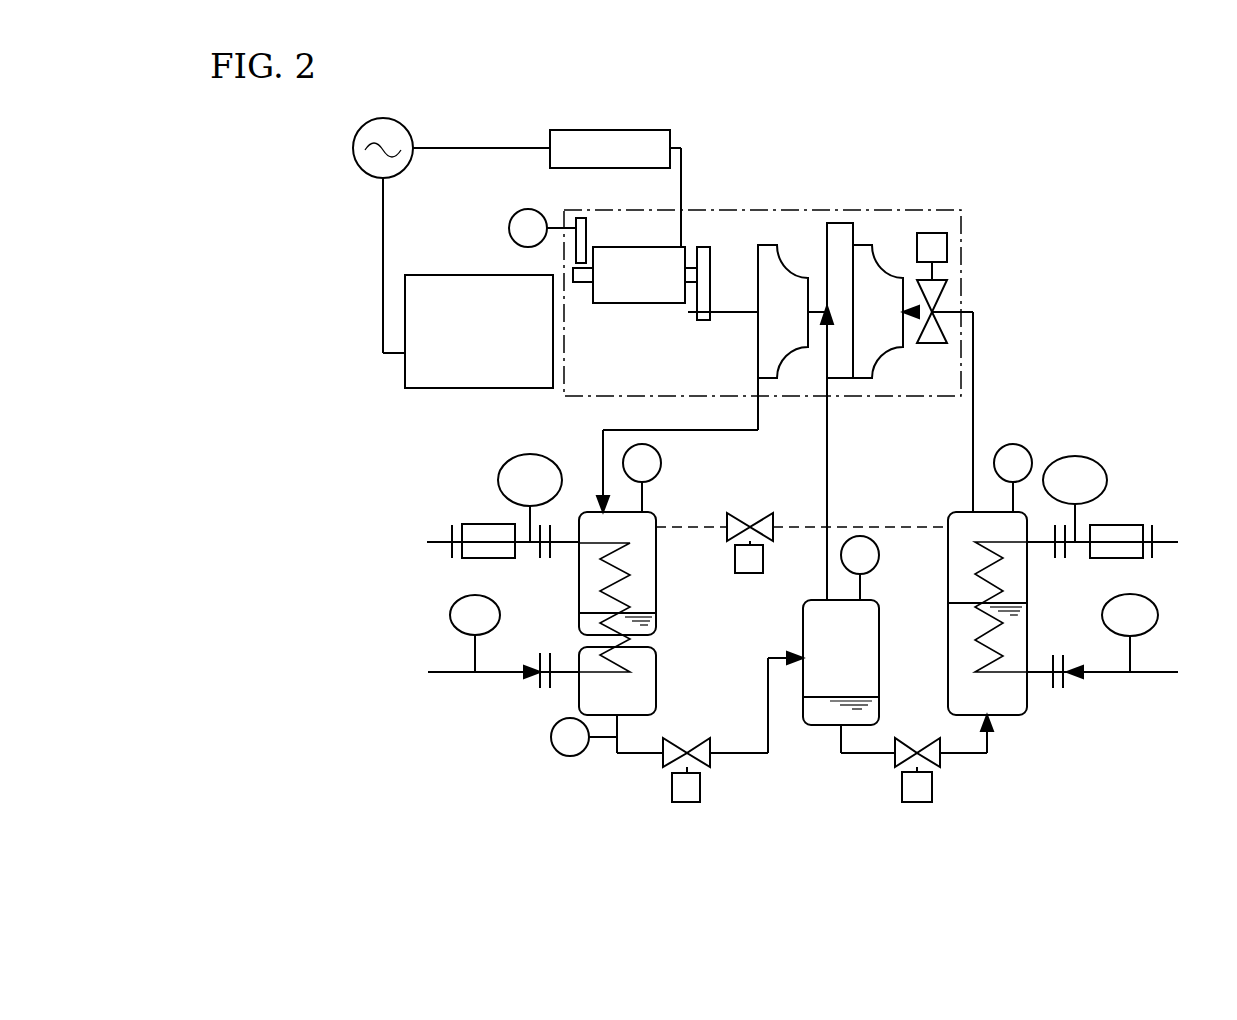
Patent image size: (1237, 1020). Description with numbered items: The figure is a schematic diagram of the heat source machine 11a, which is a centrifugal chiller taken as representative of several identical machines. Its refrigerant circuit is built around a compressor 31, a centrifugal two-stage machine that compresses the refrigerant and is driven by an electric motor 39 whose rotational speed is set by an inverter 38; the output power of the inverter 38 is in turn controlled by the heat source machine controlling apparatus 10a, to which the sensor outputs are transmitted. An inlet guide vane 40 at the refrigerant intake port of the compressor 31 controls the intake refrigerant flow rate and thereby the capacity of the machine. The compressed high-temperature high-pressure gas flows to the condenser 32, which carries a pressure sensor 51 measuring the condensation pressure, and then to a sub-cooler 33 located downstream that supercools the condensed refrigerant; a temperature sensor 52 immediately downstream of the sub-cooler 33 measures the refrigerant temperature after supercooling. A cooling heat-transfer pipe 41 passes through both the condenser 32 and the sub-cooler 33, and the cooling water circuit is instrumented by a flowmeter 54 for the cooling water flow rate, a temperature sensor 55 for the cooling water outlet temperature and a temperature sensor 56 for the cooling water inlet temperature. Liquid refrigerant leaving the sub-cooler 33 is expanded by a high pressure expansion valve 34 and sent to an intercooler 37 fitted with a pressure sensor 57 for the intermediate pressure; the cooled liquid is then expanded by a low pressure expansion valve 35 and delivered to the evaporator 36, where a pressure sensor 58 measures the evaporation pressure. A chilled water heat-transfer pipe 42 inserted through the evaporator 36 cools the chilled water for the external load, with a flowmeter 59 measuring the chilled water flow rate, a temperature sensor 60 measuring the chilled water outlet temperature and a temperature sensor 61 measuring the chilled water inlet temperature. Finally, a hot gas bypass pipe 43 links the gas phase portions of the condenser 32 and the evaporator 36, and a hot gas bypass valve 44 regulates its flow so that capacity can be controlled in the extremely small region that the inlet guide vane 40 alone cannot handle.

The heat source machine 11a is at (480, 104).
The heat source machine controlling apparatus 10a is at (475, 389).
The compressor 31 is at (990, 206).
The condenser 32 is at (590, 512).
The sub-cooler 33 is at (656, 672).
The high pressure expansion valve 34 is at (710, 761).
The low pressure expansion valve 35 is at (940, 761).
The evaporator 36 is at (955, 512).
The intercooler 37 is at (879, 647).
The inverter 38 is at (607, 130).
The electric motor 39 is at (633, 247).
The inlet guide vane 40 is at (931, 347).
The cooling heat-transfer pipe 41 is at (632, 597).
The chilled water heat-transfer pipe 42 is at (976, 571).
The hot gas bypass pipe 43 is at (688, 530).
The hot gas bypass valve 44 is at (750, 573).
The pressure sensor 51 is at (661, 463).
The temperature sensor 52 is at (570, 756).
The flowmeter 54 is at (470, 524).
The temperature sensor 55 is at (530, 453).
The temperature sensor 56 is at (500, 612).
The pressure sensor 57 is at (860, 536).
The pressure sensor 58 is at (1013, 444).
The flowmeter 59 is at (1128, 525).
The temperature sensor 60 is at (1075, 456).
The temperature sensor 61 is at (1102, 613).